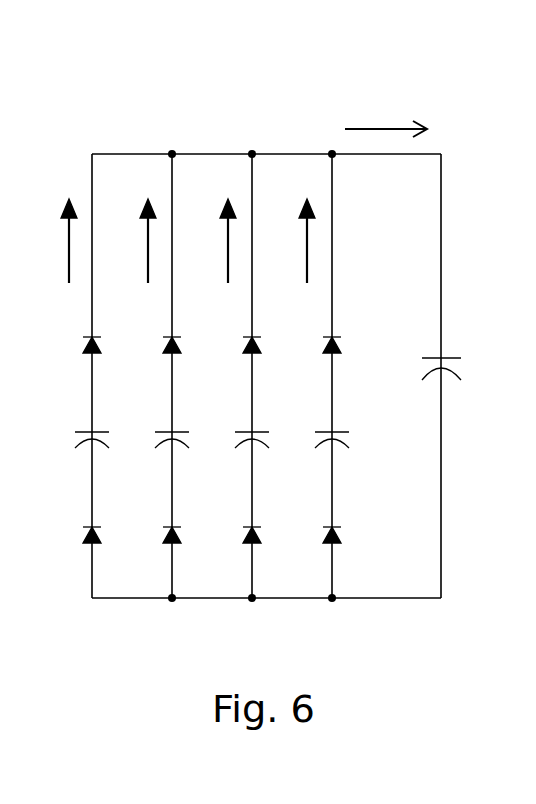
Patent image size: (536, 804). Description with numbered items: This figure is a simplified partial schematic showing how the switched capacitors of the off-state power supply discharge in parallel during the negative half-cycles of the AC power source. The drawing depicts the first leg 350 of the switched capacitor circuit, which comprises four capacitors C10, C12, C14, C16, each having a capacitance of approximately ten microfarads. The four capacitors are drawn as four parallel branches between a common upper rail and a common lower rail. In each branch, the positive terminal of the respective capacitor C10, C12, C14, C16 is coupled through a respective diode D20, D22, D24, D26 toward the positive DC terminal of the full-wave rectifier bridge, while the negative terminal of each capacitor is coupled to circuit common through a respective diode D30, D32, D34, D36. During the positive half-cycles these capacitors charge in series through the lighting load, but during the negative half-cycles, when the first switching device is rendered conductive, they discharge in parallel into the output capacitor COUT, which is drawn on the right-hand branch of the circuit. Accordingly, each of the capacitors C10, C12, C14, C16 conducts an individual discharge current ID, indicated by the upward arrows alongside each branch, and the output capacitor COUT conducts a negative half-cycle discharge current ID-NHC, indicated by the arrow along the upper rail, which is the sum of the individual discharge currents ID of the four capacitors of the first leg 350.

The first leg 350 is at (189, 107).
The diode D20 is at (86, 346).
The diode D22 is at (166, 346).
The diode D24 is at (246, 346).
The diode D26 is at (326, 346).
The capacitor C10 is at (83, 431).
The capacitor C12 is at (163, 431).
The capacitor C14 is at (243, 431).
The capacitor C16 is at (323, 431).
The diode D30 is at (85, 540).
The diode D32 is at (165, 540).
The diode D34 is at (245, 540).
The diode D36 is at (325, 540).
The individual discharge current ID is at (307, 256).
The negative half-cycle discharge current ID-NHC is at (378, 129).
The output capacitor COUT is at (435, 355).